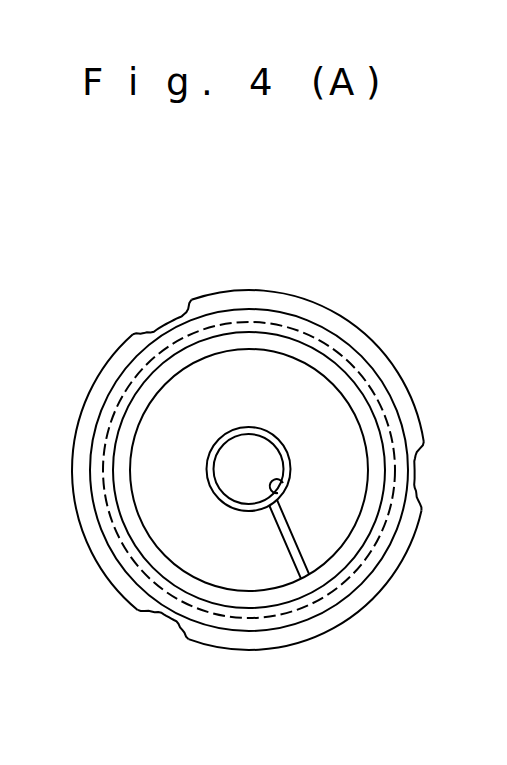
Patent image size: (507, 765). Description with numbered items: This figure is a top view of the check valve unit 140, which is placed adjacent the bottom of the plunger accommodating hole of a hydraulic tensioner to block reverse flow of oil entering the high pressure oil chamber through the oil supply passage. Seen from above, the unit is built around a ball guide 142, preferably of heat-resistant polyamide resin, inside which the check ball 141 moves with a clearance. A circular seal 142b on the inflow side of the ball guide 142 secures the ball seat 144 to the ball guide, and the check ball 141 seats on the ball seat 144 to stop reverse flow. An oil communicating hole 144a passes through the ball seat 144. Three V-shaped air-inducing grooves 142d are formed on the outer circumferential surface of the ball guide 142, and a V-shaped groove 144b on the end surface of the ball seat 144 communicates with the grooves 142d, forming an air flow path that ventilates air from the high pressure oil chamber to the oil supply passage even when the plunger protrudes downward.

The check valve unit 140 is at (202, 287).
The check ball 141 is at (275, 470).
The ball guide 142 is at (498, 470).
The circular seal 142b is at (342, 325).
The V-shaped air-inducing grooves 142d is at (170, 323).
The ball seat 144 is at (335, 400).
The oil communicating hole 144a is at (283, 483).
The V-shaped air-inducing groove 144b is at (287, 557).